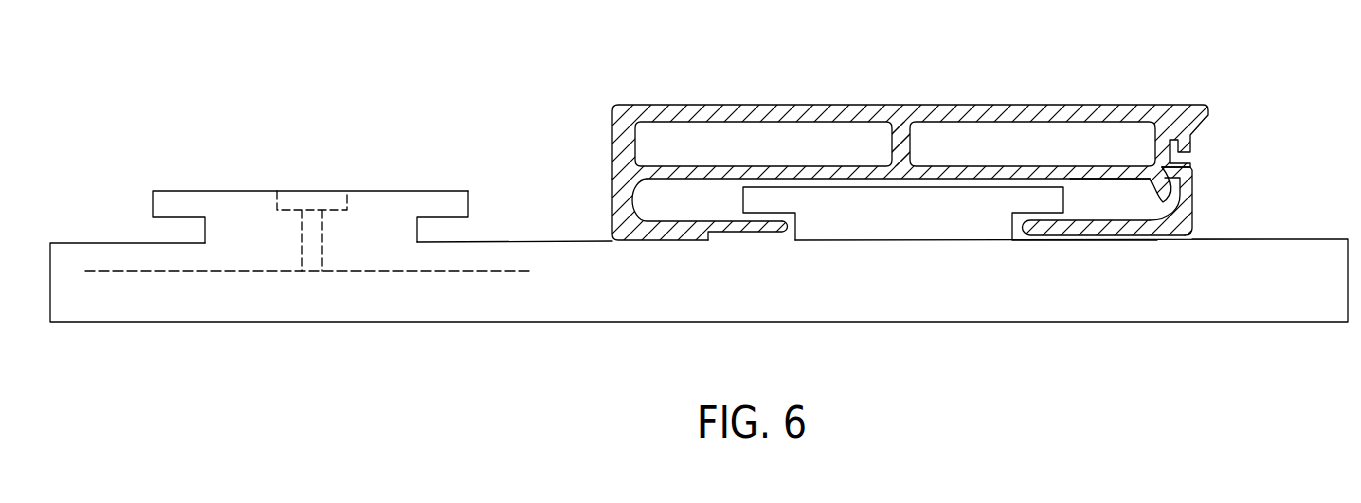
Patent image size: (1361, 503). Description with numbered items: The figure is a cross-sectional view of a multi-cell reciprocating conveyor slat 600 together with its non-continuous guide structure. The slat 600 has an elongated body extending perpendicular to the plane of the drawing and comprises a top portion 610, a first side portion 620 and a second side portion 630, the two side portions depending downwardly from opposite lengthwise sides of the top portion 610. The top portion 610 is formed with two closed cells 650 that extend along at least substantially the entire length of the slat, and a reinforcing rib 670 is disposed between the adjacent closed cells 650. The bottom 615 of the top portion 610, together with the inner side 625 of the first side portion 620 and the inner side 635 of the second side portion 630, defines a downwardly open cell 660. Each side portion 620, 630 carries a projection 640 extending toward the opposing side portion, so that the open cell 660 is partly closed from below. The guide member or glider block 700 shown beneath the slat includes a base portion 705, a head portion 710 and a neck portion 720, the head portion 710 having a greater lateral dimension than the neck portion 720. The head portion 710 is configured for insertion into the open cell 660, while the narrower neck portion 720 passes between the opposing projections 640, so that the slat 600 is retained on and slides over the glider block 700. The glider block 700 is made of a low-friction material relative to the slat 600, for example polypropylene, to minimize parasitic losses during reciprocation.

The slat 600 is at (904, 157).
The top portion 610 is at (943, 175).
The bottom 615 is at (1135, 180).
The first side portion 620 is at (656, 233).
The inner side 625 is at (632, 207).
The second side portion 630 is at (1153, 227).
The inner side 635 is at (1170, 197).
The projections 640 is at (700, 233).
The closed cells 650 is at (768, 135).
The open cell 660 is at (1125, 208).
The ribs 670 is at (908, 152).
The glider block 700 is at (929, 226).
The base portion 705 is at (874, 310).
The head portion 710 is at (308, 202).
The neck portion 720 is at (430, 229).